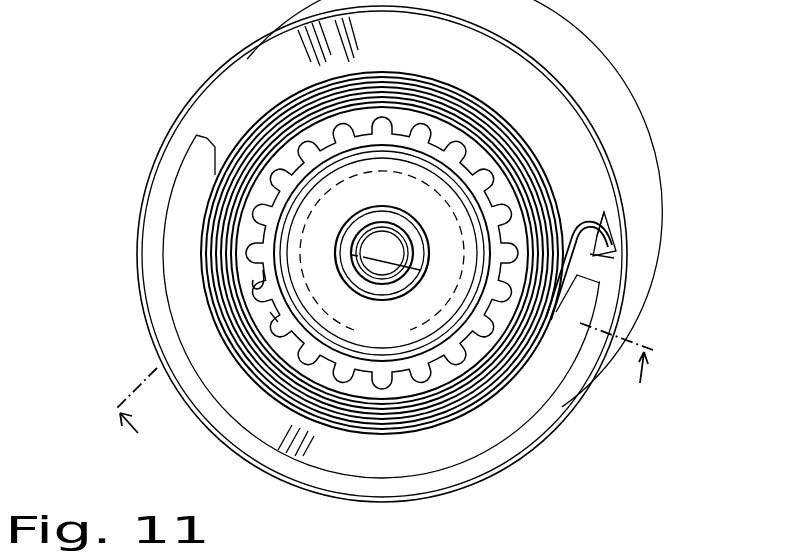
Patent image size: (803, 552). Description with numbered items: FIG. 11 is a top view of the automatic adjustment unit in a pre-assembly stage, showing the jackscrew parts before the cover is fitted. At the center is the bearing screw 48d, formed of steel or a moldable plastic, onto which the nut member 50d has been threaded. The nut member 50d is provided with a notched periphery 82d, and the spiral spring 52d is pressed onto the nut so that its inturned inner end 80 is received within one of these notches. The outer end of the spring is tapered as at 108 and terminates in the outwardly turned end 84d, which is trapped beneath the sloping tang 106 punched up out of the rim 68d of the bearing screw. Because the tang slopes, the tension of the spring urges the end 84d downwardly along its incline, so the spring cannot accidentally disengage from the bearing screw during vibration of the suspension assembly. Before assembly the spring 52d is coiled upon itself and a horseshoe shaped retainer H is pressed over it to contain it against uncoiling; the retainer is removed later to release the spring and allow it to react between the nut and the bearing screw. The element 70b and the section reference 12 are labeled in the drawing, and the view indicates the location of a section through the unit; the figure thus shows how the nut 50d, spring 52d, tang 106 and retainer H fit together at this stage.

The bearing screw 48d is at (382, 255).
The nut member 50d is at (400, 142).
The spiral spring 52d is at (490, 178).
The rim of the bearing screw 68d is at (222, 98).
The housing 70b is at (587, 396).
The inner end of the spring 80 is at (295, 278).
The notched periphery 82d is at (275, 318).
The outwardly turned end of the spring 84d is at (608, 232).
The sloping tang 106 is at (608, 249).
The tapered portion of the spring outer end 108 is at (574, 233).
The section line 12 is at (386, 385).
The horseshoe shaped retainer H is at (415, 455).